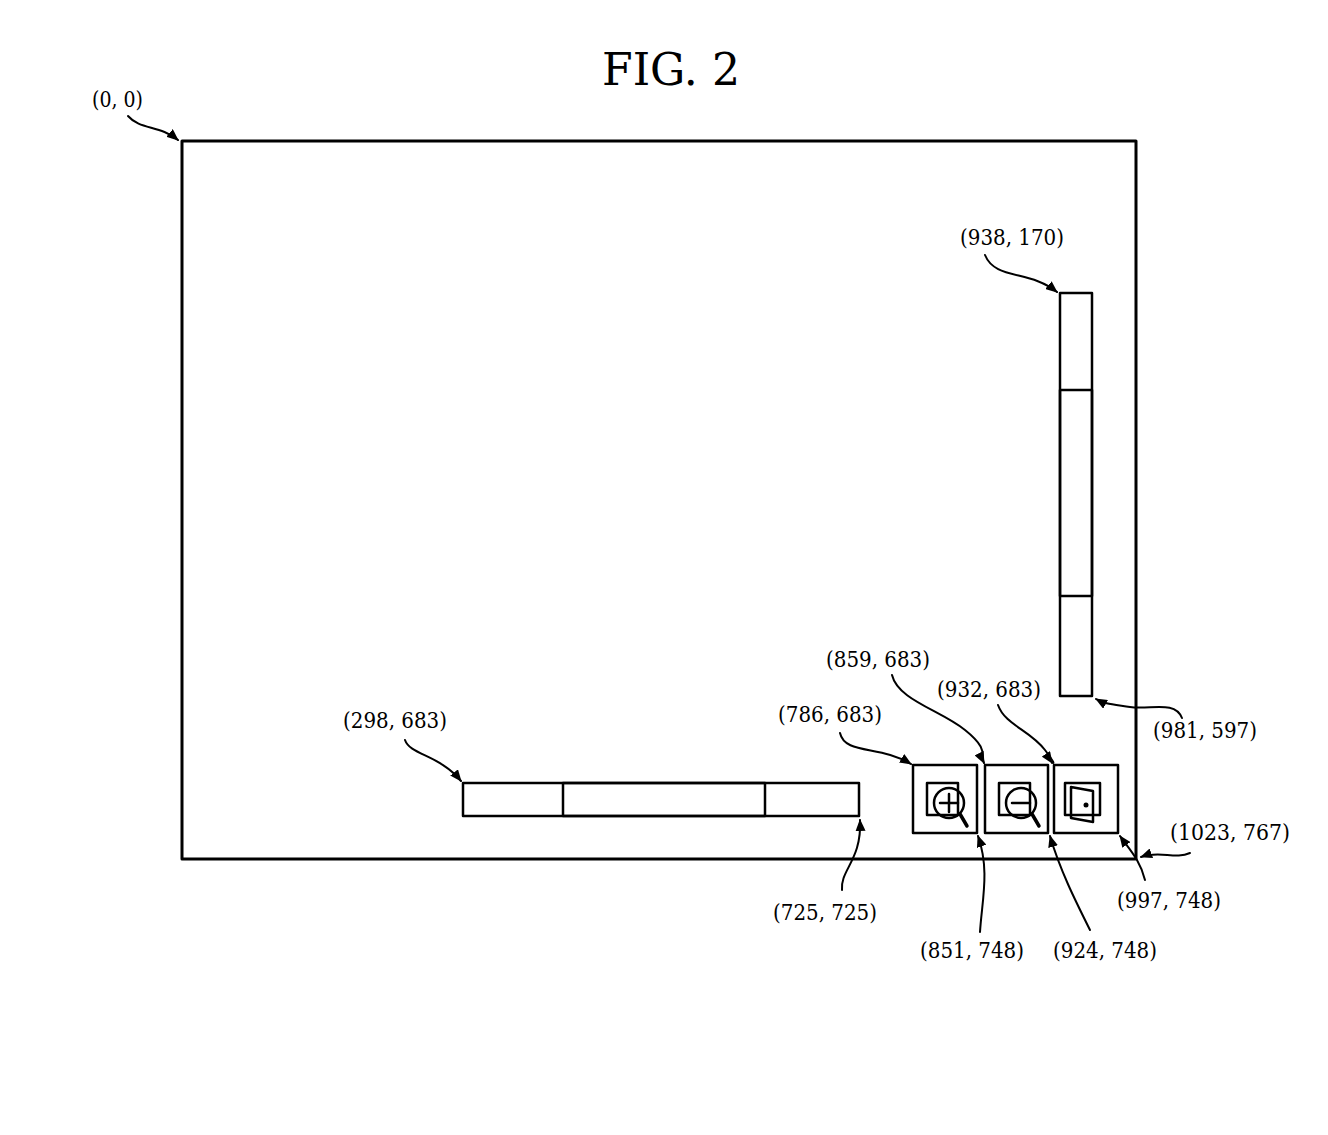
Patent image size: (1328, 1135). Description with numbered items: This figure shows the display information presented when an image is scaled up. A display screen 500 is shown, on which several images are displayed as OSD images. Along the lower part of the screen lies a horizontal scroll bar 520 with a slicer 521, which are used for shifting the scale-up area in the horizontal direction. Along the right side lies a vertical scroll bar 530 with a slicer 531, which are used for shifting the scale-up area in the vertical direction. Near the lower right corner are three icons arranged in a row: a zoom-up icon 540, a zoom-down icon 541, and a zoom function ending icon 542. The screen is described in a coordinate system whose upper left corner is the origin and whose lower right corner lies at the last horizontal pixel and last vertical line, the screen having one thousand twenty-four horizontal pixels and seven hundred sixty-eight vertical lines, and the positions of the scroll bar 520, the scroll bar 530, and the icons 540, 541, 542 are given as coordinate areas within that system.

The display screen 500 is at (1096, 139).
The scroll bar 520 is at (506, 805).
The slicer 521 is at (580, 818).
The scroll bar 530 is at (1094, 293).
The slicer 531 is at (1078, 397).
The zoom-up icon 540 is at (940, 834).
The zoom-down icon 541 is at (1020, 834).
The zoom function ending icon 542 is at (1120, 795).